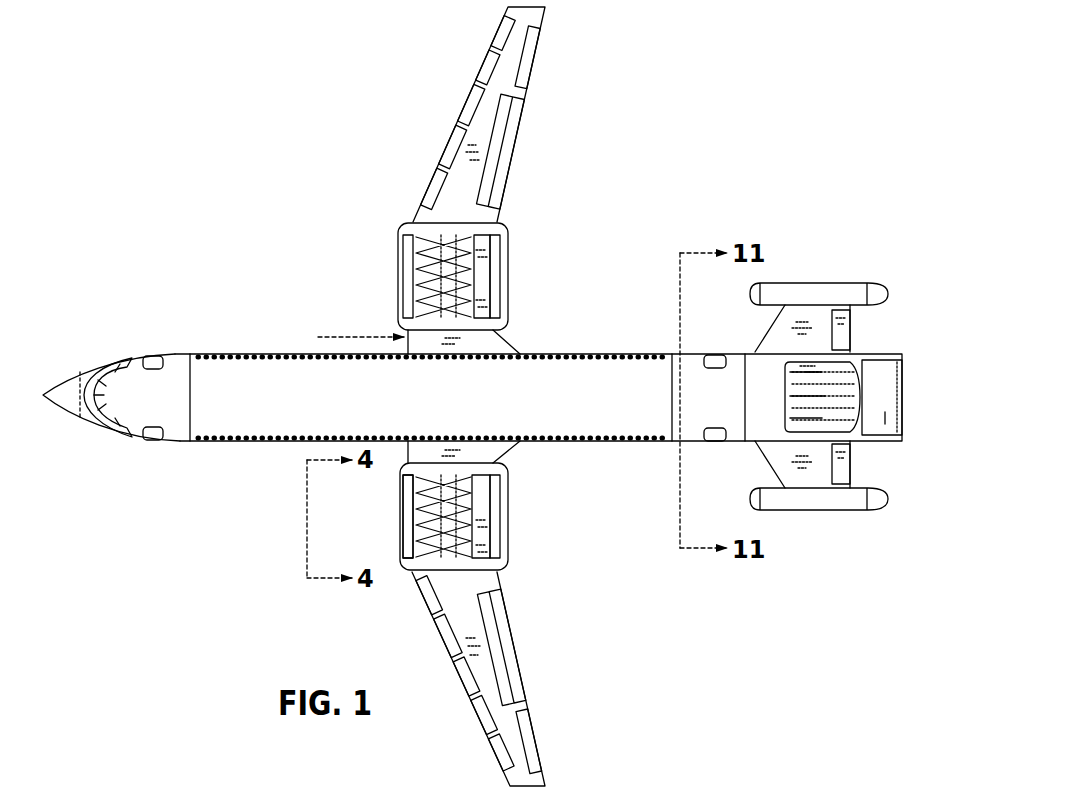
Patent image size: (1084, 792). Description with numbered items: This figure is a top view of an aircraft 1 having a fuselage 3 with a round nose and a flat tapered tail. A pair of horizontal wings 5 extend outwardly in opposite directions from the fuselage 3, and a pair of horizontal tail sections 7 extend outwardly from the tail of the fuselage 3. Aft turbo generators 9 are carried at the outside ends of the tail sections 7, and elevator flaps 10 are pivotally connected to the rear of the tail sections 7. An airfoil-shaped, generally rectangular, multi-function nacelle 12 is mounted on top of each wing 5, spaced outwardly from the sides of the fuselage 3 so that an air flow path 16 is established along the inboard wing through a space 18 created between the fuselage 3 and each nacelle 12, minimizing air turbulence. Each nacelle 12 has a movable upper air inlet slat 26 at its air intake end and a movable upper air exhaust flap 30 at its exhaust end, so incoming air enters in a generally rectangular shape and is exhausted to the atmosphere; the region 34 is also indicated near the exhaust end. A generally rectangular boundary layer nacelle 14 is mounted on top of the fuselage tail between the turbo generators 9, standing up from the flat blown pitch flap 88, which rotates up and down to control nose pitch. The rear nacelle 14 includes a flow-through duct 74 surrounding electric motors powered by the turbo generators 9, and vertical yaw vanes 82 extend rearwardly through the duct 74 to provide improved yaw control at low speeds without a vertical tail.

The aircraft 1 is at (194, 330).
The fuselage 3 is at (230, 443).
The horizontal wings 5 is at (462, 109).
The horizontal tail sections 7 is at (770, 329).
The aft turbo generators 9 is at (822, 283).
The elevator flaps 10 is at (843, 332).
The multi-function nacelle 12 is at (391, 268).
The boundary layer nacelle 14 is at (779, 390).
The air flow path 16 is at (351, 336).
The space 18 is at (498, 343).
The upper air inlet slat 26 is at (398, 528).
The upper air exhaust flap 30 is at (499, 514).
The nozzle 34 is at (486, 532).
The flow-through duct 74 is at (812, 433).
The vertical yaw vanes 82 is at (862, 415).
The blown pitch flap 88 is at (890, 418).